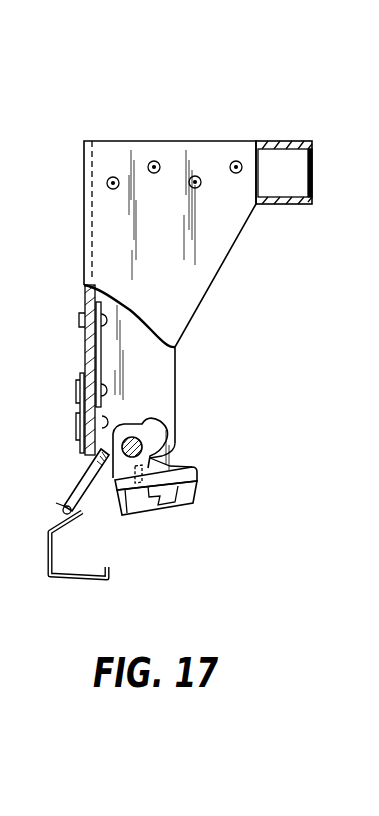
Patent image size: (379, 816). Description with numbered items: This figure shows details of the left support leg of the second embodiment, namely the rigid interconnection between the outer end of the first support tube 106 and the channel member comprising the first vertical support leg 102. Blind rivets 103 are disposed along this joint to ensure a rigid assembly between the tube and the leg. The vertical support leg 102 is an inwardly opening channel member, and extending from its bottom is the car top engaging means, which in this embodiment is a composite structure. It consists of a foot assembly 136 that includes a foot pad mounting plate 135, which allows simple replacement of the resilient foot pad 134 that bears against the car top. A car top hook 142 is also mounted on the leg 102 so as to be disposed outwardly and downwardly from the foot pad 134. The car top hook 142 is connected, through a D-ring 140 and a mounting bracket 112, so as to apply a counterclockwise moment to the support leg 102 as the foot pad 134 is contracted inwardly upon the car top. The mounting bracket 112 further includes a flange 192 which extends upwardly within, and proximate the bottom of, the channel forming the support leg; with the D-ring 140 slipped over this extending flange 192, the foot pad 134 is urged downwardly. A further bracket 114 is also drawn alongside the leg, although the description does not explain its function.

The first vertical support leg 102 is at (197, 243).
The blind rivets 103 is at (236, 160).
The first support tube 106 is at (290, 141).
The mounting bracket 112 is at (80, 457).
The bracket 114 is at (78, 385).
The foot pad 134 is at (198, 492).
The foot pad mounting plate 135 is at (197, 477).
The foot assembly 136 is at (186, 470).
The D-ring 140 is at (88, 497).
The car top hook 142 is at (78, 582).
The flange 192 is at (114, 428).